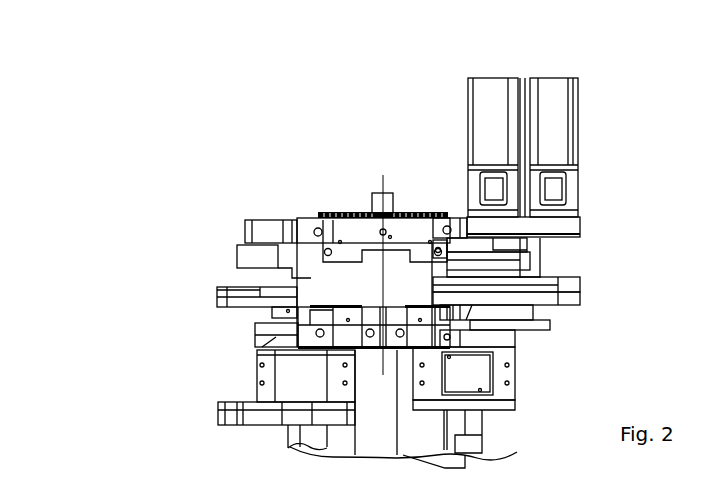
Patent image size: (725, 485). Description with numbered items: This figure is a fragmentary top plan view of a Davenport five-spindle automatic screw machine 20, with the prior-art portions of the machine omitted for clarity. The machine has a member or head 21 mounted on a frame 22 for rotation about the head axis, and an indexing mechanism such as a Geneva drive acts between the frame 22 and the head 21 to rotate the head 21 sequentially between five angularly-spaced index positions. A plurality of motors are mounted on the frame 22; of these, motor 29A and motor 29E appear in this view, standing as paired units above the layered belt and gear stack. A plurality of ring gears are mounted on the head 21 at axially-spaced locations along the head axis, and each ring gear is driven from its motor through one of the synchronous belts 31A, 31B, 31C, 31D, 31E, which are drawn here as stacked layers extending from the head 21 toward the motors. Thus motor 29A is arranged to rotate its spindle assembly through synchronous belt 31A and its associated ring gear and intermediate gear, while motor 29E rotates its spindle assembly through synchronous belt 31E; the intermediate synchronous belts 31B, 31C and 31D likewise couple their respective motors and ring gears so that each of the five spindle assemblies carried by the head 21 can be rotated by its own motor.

The five-spindle automatic screw machine 20 is at (333, 130).
The head 21 is at (366, 332).
The frame 22 is at (496, 417).
The motor 29A is at (490, 97).
The motor 29E is at (556, 88).
The synchronous belt 31A is at (517, 243).
The synchronous belt 31B is at (533, 253).
The synchronous belt 31C is at (518, 270).
The synchronous belt 31D is at (568, 288).
The synchronous belt 31E is at (566, 301).